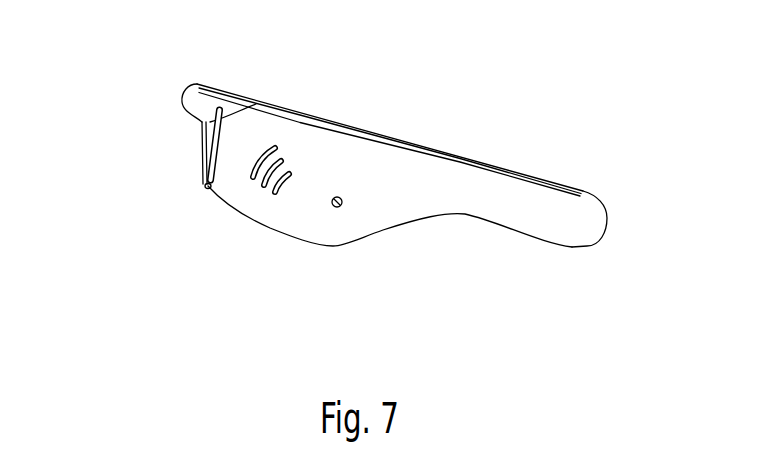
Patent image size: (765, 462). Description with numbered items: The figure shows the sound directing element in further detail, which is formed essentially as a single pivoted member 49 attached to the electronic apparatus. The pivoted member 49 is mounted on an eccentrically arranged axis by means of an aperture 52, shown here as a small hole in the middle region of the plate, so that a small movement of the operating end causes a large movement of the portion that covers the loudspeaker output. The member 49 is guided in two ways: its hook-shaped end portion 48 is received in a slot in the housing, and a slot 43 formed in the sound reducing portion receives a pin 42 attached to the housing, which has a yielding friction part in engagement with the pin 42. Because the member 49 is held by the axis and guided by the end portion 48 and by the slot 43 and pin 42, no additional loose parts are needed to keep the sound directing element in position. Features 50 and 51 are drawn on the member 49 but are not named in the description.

The pin 42 is at (207, 189).
The slot 43 is at (222, 108).
The end portion 48 is at (195, 87).
The pivoted member 49 is at (392, 173).
The leg of hook 50 is at (202, 165).
The gripping ribs 51 is at (253, 180).
The aperture 52 is at (337, 208).